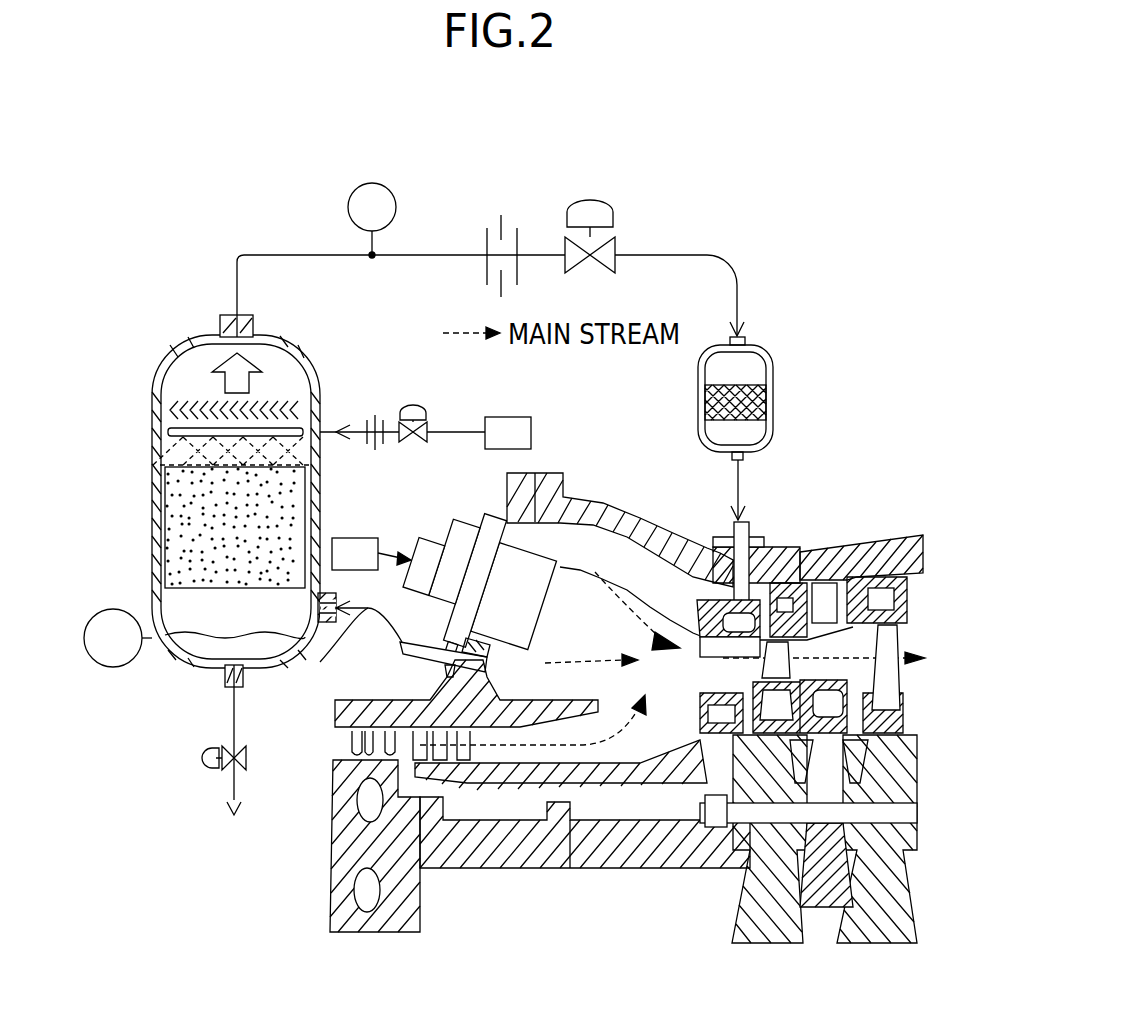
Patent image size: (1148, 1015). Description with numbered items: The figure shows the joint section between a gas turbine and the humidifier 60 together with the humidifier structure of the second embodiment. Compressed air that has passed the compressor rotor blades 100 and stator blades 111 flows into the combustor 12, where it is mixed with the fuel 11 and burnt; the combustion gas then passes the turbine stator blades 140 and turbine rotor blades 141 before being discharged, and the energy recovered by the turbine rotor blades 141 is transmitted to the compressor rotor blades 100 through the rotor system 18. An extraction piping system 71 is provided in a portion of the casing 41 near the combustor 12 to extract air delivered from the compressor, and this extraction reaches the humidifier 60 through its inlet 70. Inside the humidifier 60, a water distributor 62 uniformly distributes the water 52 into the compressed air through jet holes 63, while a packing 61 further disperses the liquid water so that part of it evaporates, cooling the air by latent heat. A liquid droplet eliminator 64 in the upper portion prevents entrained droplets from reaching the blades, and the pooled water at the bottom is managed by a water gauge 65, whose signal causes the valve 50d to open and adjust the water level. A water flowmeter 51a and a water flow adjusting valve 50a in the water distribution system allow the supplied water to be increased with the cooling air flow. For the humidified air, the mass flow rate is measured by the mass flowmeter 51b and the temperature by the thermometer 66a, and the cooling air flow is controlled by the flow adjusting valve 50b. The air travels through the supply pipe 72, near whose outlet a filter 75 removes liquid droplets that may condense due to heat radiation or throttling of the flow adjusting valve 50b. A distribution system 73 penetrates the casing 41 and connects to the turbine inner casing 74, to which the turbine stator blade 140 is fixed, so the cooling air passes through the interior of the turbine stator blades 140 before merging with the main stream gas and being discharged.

The fuel 11 is at (352, 538).
The combustor 12 is at (574, 580).
The rotor system 18 is at (587, 862).
The casing 41 is at (598, 498).
The water flow adjusting valve 50a is at (413, 405).
The flow adjusting valve 50b is at (590, 205).
The valve 50d is at (205, 766).
The water flowmeter 51a is at (362, 418).
The mass flowmeter 51b is at (503, 215).
The water 52 is at (505, 417).
The humidifier 60 is at (318, 309).
The packing 61 is at (165, 530).
The water distributor 62 is at (165, 432).
The jet holes 63 is at (166, 446).
The liquid droplet eliminator 64 is at (152, 390).
The water gauge 65 is at (113, 667).
The thermometer 66a is at (348, 207).
The inlet 70 is at (365, 630).
The extraction piping system 71 is at (420, 650).
The supply pipe 72 is at (666, 255).
The distribution system 73 is at (752, 530).
The turbine inner casing 74 is at (713, 605).
The filter 75 is at (773, 398).
The rotor blades 100 is at (333, 772).
The stator blades 111 is at (385, 738).
The turbine stator blades 140 is at (795, 575).
The turbine rotor blades 141 is at (845, 570).